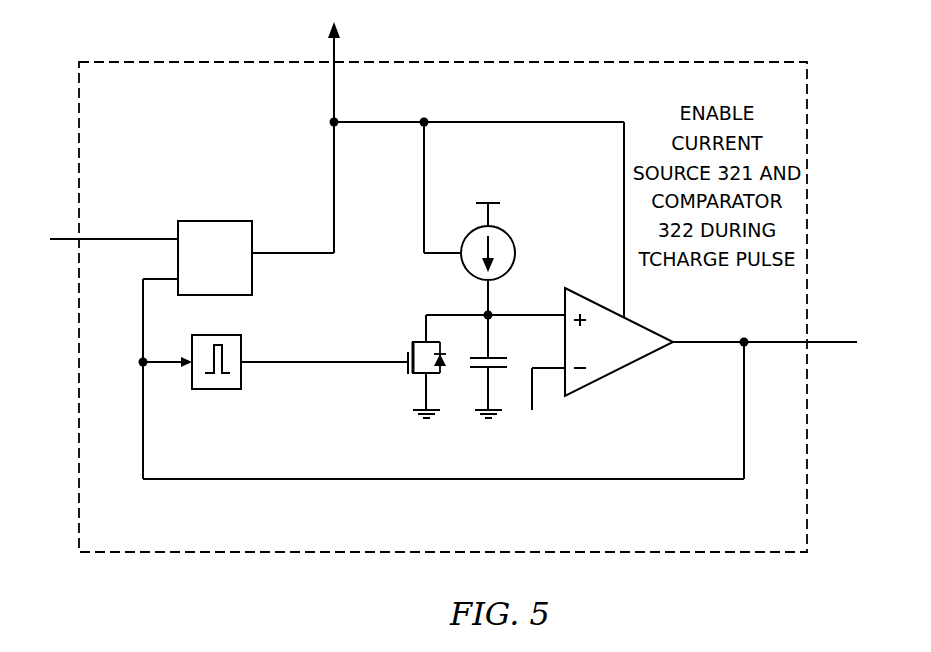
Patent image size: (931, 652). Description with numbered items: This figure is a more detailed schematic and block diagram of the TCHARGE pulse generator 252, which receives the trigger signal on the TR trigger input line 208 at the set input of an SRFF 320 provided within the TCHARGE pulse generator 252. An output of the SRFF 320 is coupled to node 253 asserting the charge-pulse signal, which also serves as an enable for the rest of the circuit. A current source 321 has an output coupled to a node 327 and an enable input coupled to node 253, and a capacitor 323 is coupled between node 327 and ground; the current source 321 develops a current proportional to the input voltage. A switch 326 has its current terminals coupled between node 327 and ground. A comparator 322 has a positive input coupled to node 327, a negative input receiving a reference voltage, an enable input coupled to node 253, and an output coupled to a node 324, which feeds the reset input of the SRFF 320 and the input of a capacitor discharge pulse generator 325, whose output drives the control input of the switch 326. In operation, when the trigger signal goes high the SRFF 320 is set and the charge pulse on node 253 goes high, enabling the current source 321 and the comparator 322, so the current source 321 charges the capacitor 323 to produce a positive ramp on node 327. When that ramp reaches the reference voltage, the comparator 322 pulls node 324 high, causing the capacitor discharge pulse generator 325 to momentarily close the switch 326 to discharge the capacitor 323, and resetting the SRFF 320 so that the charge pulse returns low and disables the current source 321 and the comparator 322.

The TCHARGE pulse generator 252 is at (443, 307).
The node 253 is at (336, 122).
The TR trigger input line 208 is at (68, 241).
The SRFF 320 is at (245, 221).
The current source 321 is at (507, 232).
The comparator 322 is at (641, 362).
The capacitor 323 is at (500, 356).
The node 324 is at (742, 344).
The capacitor discharge pulse generator 325 is at (215, 389).
The switch 326 is at (407, 364).
The node 327 is at (487, 314).